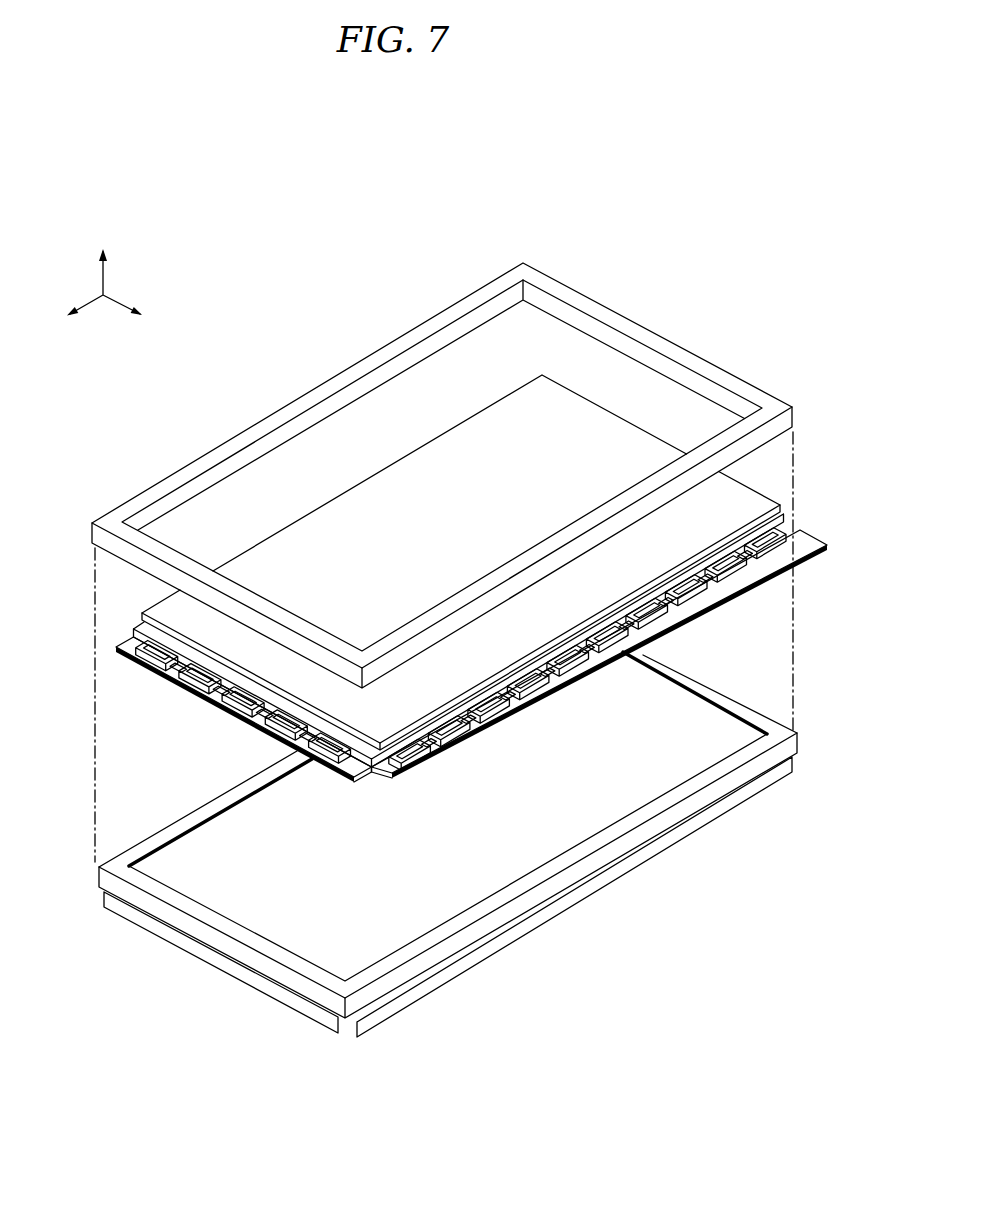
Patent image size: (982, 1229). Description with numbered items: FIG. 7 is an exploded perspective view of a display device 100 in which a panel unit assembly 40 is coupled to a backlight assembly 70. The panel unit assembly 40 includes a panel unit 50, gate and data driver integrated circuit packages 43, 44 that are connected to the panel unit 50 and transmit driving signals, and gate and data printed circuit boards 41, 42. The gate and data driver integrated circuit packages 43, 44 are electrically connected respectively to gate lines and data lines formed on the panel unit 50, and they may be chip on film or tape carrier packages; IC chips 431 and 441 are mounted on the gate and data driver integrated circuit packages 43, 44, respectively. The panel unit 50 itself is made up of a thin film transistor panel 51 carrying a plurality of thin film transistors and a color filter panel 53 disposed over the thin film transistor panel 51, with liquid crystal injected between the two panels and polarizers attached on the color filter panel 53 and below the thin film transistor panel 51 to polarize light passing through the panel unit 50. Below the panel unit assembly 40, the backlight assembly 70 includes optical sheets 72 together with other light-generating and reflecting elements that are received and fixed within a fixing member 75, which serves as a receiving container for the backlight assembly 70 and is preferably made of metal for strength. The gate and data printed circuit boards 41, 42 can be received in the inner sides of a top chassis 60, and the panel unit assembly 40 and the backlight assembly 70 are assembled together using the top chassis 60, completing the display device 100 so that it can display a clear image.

The display device 100 is at (313, 255).
The top chassis 60 is at (760, 397).
The panel unit 50 is at (488, 571).
The color filter panel 53 is at (780, 500).
The thin film transistor panel 51 is at (786, 516).
The panel unit assembly 40 is at (454, 650).
The gate printed circuit board 41 is at (205, 700).
The data printed circuit board 42 is at (828, 541).
The gate driver integrated circuit package 43 is at (157, 671).
The IC chip 431 is at (154, 668).
The data driver integrated circuit package 44 is at (798, 552).
The IC chip 441 is at (772, 548).
The backlight assembly 70 is at (475, 847).
The optical sheets 72 is at (297, 910).
The fixing member 75 is at (598, 878).